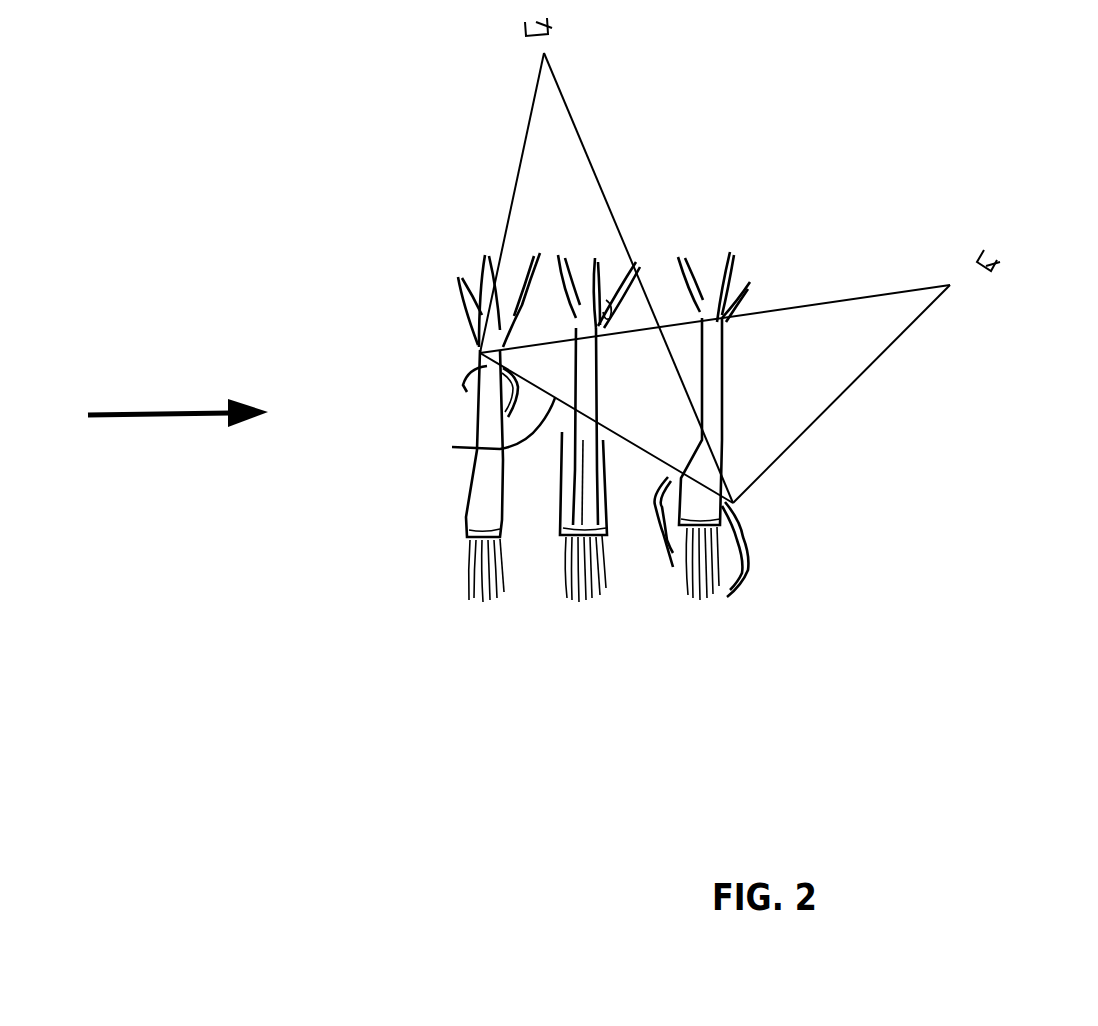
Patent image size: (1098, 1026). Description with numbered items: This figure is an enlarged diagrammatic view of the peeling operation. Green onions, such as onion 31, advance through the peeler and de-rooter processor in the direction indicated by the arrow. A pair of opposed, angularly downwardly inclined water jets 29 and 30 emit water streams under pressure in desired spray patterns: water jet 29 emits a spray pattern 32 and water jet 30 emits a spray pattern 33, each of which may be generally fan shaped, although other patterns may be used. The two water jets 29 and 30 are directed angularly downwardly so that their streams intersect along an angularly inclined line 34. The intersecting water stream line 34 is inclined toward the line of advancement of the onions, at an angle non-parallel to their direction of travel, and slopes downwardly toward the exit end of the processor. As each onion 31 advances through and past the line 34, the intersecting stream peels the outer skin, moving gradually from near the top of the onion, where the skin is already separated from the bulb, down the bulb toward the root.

The water jet 29 is at (992, 272).
The water jet 30 is at (524, 33).
The onion 31 is at (737, 278).
The spray pattern 32 is at (807, 407).
The spray pattern 33 is at (541, 180).
The intersecting water stream line 34 is at (472, 436).